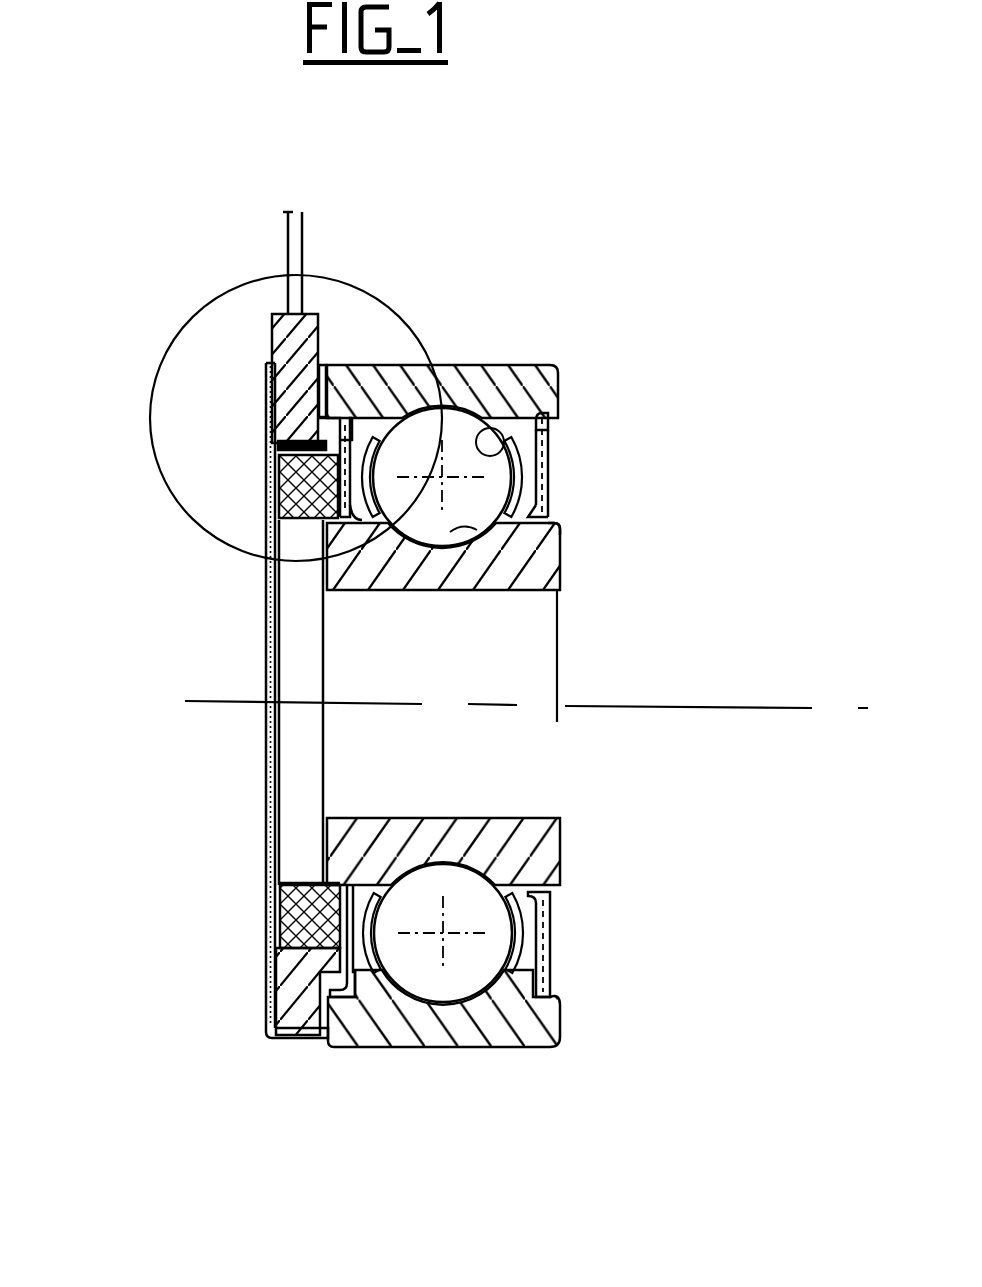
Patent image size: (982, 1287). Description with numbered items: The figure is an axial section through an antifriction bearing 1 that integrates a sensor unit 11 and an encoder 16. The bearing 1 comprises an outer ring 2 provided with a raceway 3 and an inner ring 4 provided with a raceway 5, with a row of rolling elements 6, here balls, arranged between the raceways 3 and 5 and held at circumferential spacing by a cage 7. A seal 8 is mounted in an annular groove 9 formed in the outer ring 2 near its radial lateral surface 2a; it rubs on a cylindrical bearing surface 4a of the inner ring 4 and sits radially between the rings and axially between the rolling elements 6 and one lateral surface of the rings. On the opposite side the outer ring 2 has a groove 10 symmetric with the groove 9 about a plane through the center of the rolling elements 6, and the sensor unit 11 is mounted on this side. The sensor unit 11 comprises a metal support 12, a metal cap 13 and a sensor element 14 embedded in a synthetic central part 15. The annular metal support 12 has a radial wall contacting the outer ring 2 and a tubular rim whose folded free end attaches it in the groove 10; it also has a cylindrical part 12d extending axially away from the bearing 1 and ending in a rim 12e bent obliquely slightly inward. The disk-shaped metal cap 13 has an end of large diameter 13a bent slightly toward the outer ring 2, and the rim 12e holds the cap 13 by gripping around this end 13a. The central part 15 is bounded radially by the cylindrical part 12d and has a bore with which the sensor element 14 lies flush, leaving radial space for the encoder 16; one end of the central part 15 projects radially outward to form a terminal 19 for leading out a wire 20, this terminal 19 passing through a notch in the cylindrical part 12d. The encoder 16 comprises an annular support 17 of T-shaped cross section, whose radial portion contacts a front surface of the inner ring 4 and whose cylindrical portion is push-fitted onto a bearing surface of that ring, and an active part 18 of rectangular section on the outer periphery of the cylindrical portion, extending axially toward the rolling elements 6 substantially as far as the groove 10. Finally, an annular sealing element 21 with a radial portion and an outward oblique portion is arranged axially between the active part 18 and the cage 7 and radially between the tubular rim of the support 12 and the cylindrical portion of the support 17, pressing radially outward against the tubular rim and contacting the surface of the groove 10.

The antifriction bearing 1 is at (535, 490).
The outer ring 2 is at (547, 392).
The radial lateral surface 2a is at (562, 1017).
The raceway 3 is at (640, 486).
The inner ring 4 is at (511, 589).
The cylindrical bearing surface 4a is at (556, 521).
The raceway 5 is at (490, 527).
The rolling elements 6 is at (430, 527).
The cage 7 is at (548, 485).
The seal 8 is at (548, 493).
The annular groove 9 is at (550, 430).
The groove 10 is at (367, 420).
The sensor unit 11 is at (255, 385).
The metal support 12 is at (277, 768).
The cylindrical part 12d is at (325, 1040).
The rim 12e is at (267, 1033).
The metal cap 13 is at (229, 910).
The end of large diameter 13a is at (273, 1000).
The sensor element 14 is at (276, 442).
The synthetic central part 15 is at (300, 987).
The encoder 16 is at (296, 740).
The annular support 17 is at (300, 883).
The active part 18 is at (287, 900).
The terminal 19 is at (267, 337).
The wire 20 is at (288, 235).
The sealing element 21 is at (335, 546).